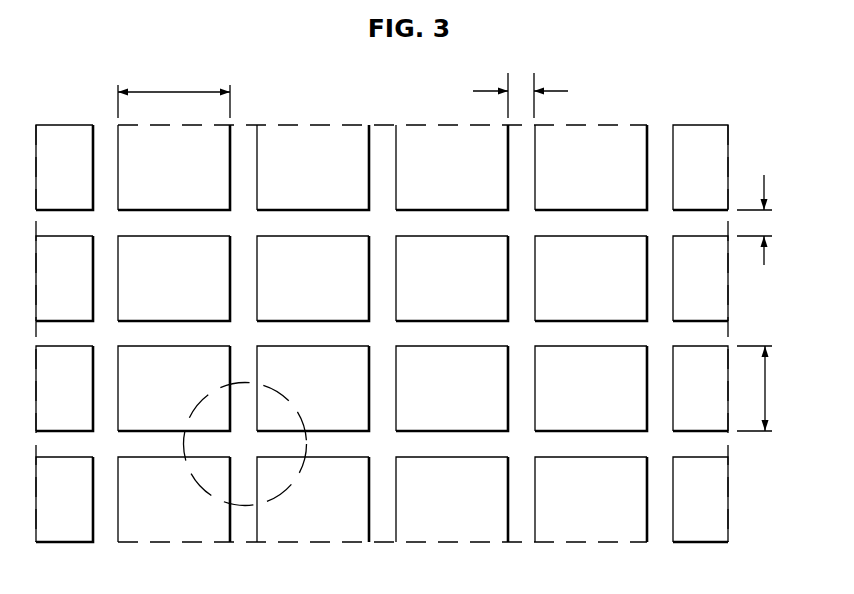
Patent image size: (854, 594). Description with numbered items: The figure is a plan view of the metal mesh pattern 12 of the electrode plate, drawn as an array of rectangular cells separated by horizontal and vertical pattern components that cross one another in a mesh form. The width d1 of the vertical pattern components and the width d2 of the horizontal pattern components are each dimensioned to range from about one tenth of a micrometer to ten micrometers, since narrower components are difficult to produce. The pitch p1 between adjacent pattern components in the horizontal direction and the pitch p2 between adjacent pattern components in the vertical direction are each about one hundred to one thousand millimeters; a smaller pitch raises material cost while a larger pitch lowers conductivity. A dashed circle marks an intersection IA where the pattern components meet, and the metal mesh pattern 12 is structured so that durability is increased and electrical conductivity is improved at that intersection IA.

The metal mesh pattern 12 is at (722, 333).
The intersection IA is at (213, 468).
The pitch p1 is at (174, 94).
The width d1 is at (520, 93).
The width d2 is at (764, 220).
The pitch p2 is at (766, 388).